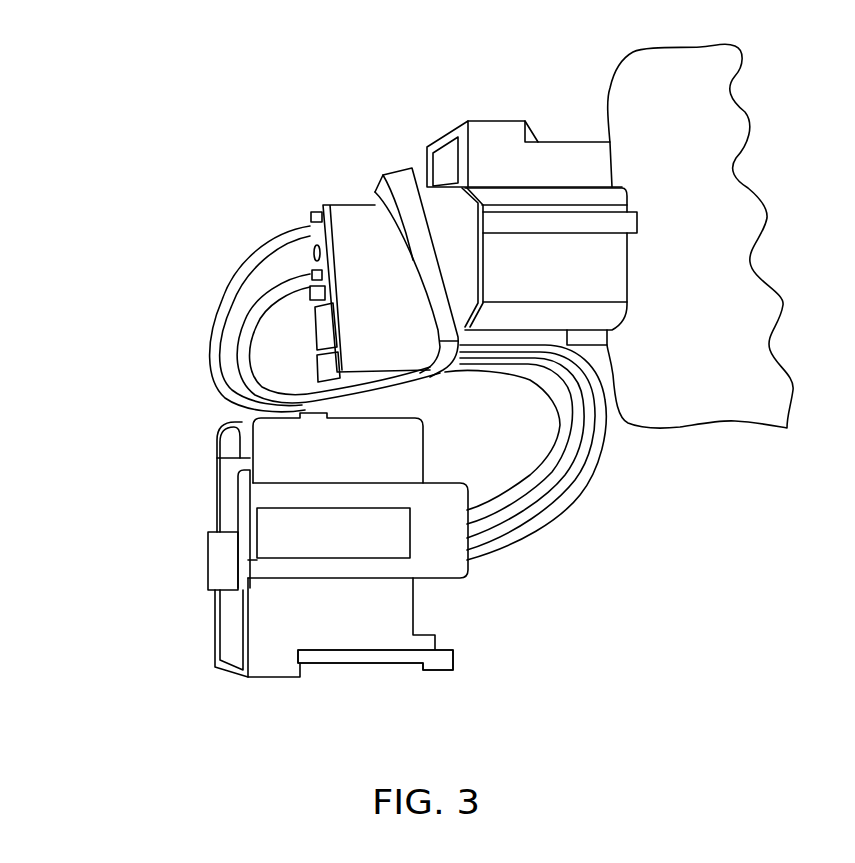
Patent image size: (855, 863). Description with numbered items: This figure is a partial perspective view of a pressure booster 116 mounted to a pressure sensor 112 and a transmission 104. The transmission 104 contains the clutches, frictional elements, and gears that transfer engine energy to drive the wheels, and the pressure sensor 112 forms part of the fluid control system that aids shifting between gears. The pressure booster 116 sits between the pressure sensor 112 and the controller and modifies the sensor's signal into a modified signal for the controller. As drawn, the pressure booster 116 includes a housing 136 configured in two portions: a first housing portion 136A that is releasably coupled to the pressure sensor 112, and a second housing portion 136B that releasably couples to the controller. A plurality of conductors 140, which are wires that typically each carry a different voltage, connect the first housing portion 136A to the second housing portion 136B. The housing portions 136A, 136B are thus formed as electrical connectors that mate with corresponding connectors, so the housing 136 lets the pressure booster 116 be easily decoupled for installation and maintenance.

The transmission 104 is at (642, 63).
The pressure sensor 112 is at (575, 153).
The pressure booster 116 is at (125, 266).
The housing 136 is at (505, 597).
The first housing portion 136A is at (350, 200).
The second housing portion 136B is at (323, 664).
The conductors 140 is at (597, 447).